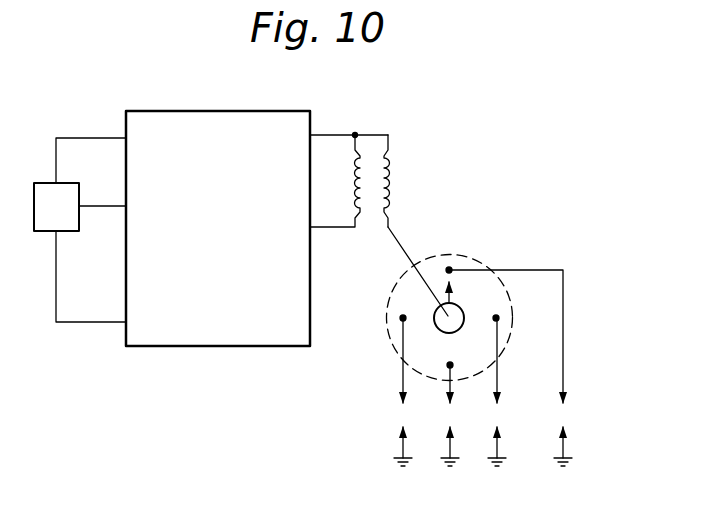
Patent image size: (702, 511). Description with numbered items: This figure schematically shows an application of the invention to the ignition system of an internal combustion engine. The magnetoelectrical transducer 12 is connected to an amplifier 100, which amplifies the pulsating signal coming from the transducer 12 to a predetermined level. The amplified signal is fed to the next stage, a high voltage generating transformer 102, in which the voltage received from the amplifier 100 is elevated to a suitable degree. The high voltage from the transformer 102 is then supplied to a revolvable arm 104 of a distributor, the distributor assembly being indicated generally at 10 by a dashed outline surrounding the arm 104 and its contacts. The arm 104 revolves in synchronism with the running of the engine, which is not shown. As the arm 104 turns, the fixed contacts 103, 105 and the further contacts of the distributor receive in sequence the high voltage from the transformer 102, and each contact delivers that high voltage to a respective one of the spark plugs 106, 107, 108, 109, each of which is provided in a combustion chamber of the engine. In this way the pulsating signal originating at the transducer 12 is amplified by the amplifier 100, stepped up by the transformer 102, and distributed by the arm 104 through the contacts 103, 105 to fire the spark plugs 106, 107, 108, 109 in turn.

The rotary switch 10 is at (387, 342).
The magnetoelectrical transducer 12 is at (46, 218).
The amplifier 100 is at (170, 335).
The high voltage generating transformer 102 is at (369, 151).
The fixed contact 103 is at (402, 310).
The revolvable arm 104 is at (458, 297).
The fixed contact 105 is at (500, 316).
The spark plug 106 is at (403, 405).
The spark plug 107 is at (453, 403).
The spark plug 108 is at (503, 404).
The spark plug 109 is at (560, 404).